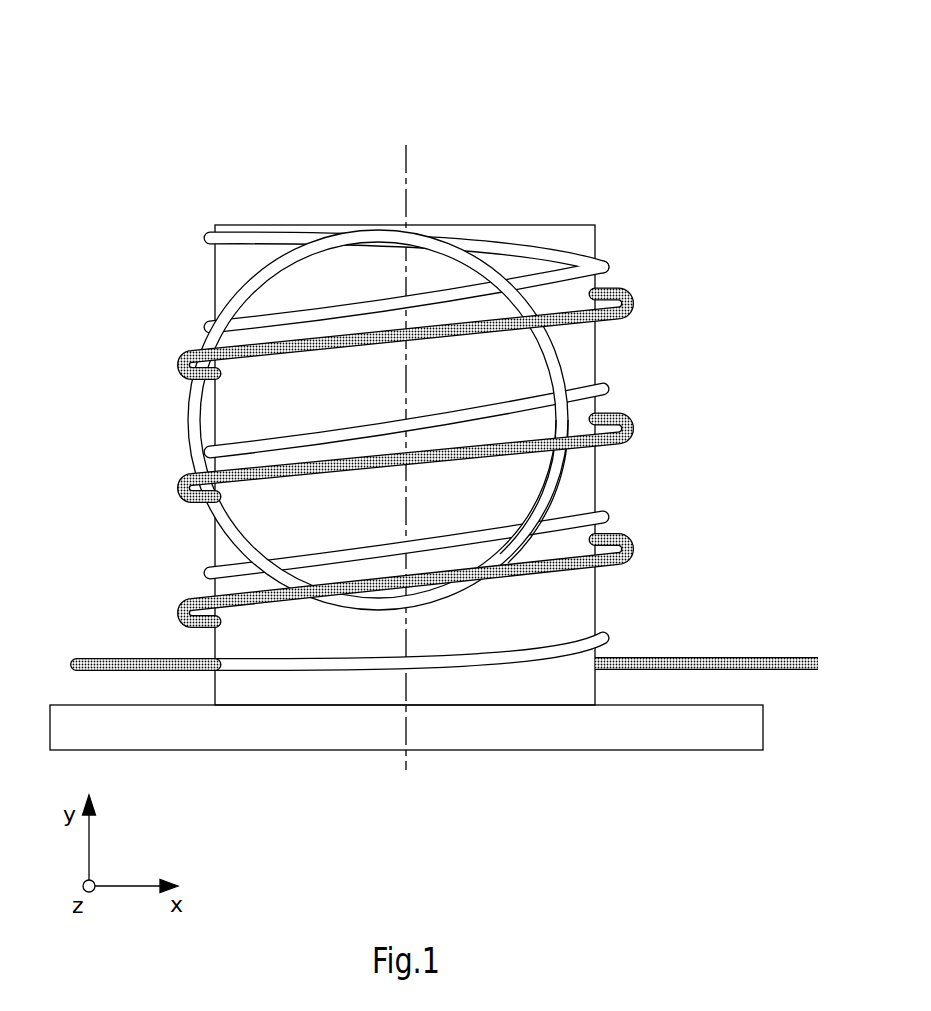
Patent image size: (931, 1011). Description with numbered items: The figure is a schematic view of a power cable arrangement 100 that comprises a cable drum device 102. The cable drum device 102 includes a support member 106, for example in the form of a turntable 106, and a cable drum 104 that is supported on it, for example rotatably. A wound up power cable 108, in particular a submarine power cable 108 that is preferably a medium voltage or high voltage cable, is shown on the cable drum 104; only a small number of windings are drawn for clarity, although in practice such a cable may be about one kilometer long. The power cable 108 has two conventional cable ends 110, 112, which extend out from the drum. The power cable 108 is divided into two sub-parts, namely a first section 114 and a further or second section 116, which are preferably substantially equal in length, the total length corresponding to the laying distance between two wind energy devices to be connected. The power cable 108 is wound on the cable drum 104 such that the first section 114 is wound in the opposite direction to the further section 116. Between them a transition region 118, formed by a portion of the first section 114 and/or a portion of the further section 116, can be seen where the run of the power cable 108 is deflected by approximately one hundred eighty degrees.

The power cable arrangement 100 is at (434, 420).
The cable drum device 102 is at (448, 425).
The cable drum 104 is at (559, 252).
The support member 106 is at (675, 730).
The power cable 108 is at (451, 377).
The cable end 110 is at (755, 656).
The cable end 112 is at (120, 657).
The first section 114 is at (329, 305).
The second section 116 is at (271, 345).
The transition region 118 is at (557, 475).